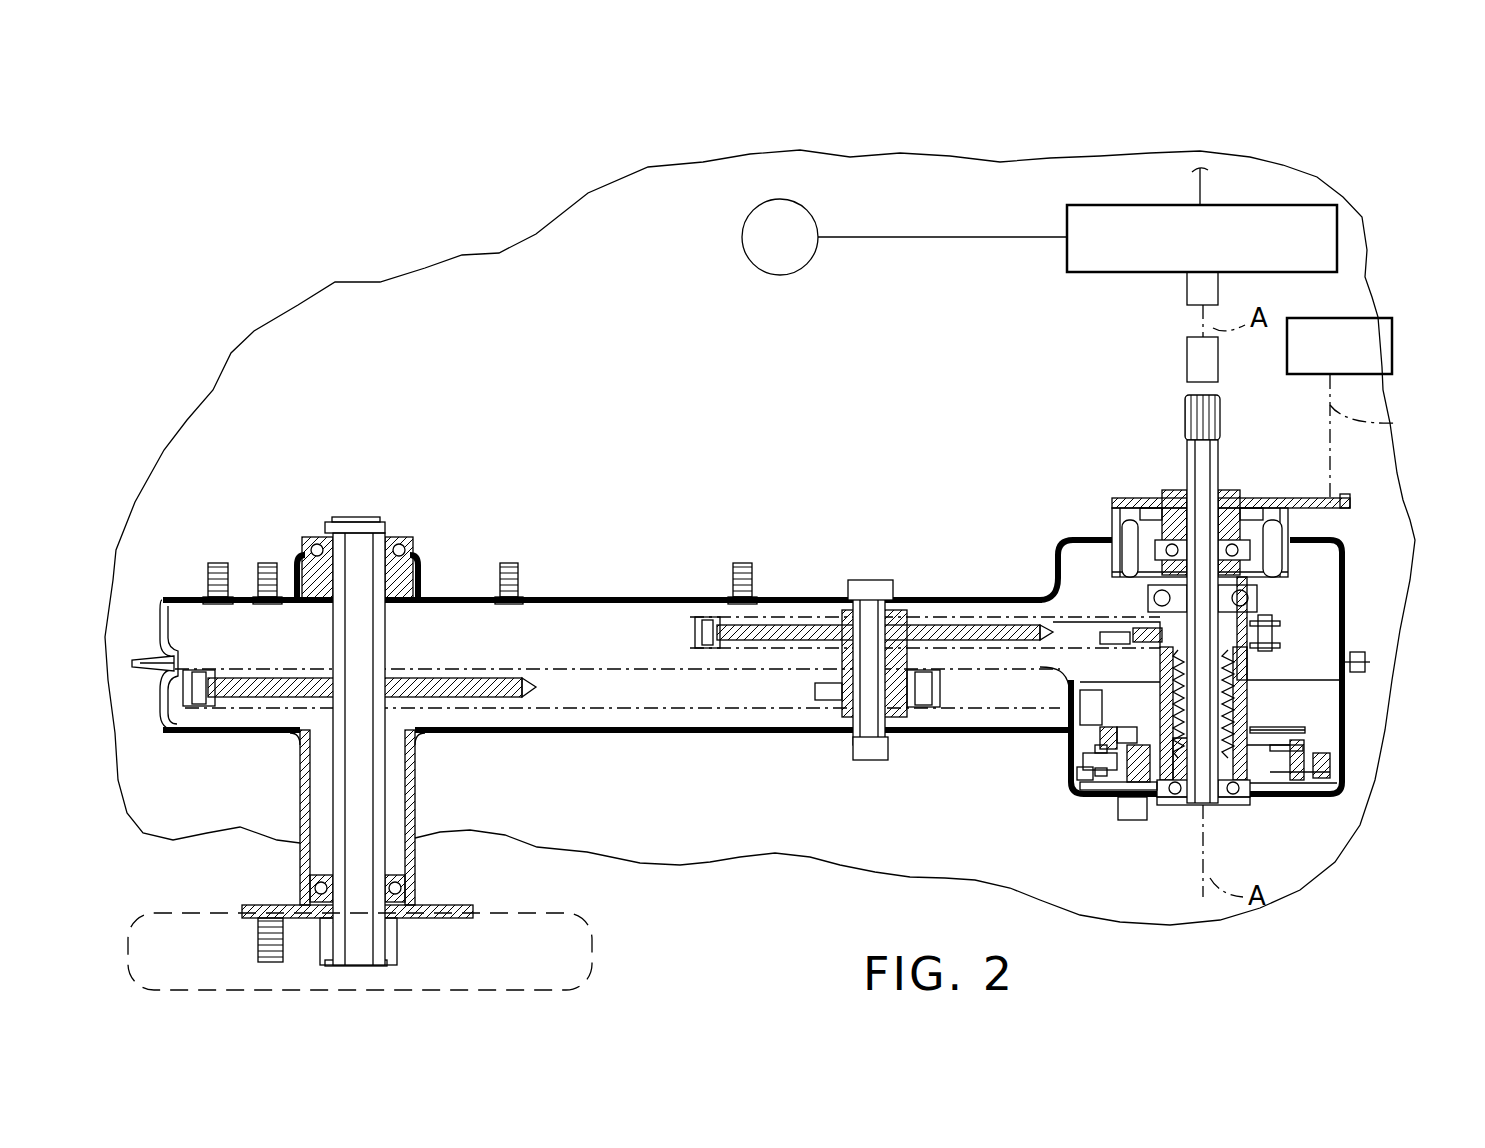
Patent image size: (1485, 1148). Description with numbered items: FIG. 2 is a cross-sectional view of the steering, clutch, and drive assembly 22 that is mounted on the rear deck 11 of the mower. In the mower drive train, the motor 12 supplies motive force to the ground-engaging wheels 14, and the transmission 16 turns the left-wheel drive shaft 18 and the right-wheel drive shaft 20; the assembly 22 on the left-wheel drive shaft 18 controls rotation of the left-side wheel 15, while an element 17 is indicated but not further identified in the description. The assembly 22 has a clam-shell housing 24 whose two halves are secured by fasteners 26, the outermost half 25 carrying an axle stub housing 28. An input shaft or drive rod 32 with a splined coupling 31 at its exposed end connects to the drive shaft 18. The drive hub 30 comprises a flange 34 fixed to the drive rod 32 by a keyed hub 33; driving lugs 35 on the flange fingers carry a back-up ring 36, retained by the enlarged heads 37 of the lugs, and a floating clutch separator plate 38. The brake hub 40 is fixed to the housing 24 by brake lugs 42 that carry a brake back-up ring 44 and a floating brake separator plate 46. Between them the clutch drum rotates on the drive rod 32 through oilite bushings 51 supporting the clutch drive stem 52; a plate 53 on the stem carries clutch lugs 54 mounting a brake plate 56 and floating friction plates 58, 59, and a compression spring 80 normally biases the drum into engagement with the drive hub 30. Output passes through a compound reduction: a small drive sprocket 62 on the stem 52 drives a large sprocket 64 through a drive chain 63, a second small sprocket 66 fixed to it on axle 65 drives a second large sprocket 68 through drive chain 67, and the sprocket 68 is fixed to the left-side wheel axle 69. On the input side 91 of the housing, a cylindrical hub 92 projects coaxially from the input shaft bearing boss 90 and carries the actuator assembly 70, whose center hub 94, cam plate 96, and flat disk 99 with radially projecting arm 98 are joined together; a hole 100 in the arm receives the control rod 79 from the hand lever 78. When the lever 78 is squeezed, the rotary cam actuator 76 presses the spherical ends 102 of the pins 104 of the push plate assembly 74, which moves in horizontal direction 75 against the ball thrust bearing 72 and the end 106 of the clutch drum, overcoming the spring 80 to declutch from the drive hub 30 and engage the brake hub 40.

The rear deck 11 is at (404, 295).
The motor 12 is at (805, 207).
The ground-engaging wheels 14 is at (160, 905).
The left-side wheel 15 is at (592, 955).
The transmission 16 is at (1318, 262).
The ground / frame 17 is at (727, 883).
The left-wheel drive shaft 18 is at (1187, 293).
The right-wheel drive shaft 20 is at (1205, 185).
The steering, clutch, and drive assembly 22 is at (1085, 430).
The clam-shell type housing 24 is at (598, 590).
The outermost half 25 is at (720, 733).
The fasteners 26 is at (1365, 672).
The axle stub housing 28 is at (415, 850).
The drive hub 30 is at (1275, 725).
The splined coupling 31 is at (1212, 415).
The input shaft or drive rod 32 is at (1205, 462).
The keyed hub 33 is at (1240, 740).
The flange 34 is at (1300, 742).
The driving lug 35 is at (1140, 805).
The back-up ring 36 is at (1105, 740).
The enlarged head 37 is at (1158, 745).
The clutch separator plate 38 is at (1122, 740).
The brake hub 40 is at (1310, 790).
The brake lugs 42 is at (1120, 815).
The brake back-up ring 44 is at (1085, 795).
The brake separator plate 46 is at (1135, 805).
The oilite bushings 51 is at (1265, 623).
The clutch drive stem 52 is at (1262, 655).
The plate 53 is at (1115, 683).
The clutch lugs 54 is at (1090, 720).
The brake plate 56 is at (1080, 782).
The floating friction plates 58 is at (1075, 748).
The floating friction plates 59 is at (1095, 790).
The small drive sprocket 62 is at (1330, 648).
The drive chain 63 is at (707, 617).
The large driven sprocket 64 is at (960, 625).
The axle 65 is at (866, 582).
The second small driver sprocket 66 is at (940, 690).
The drive chain 67 is at (182, 712).
The second large driven sprocket 68 is at (470, 667).
The left-side wheel axle 69 is at (365, 812).
The actuator assembly 70 is at (1290, 462).
The ball thrust bearing member 72 is at (1115, 582).
The push plate assembly 74 is at (1342, 547).
The horizontal direction 75 is at (1387, 540).
The rotary cam actuator 76 is at (1345, 492).
The hand lever 78 is at (1350, 375).
The control rod 79 is at (1380, 439).
The compression spring 80 is at (1185, 790).
The input shaft bearing boss 90 is at (1190, 500).
The input side 91 is at (1178, 440).
The cylindrical hub 92 is at (1235, 490).
The center hub 94 is at (1175, 495).
The cam plate 96 is at (1130, 505).
The arm 98 is at (1300, 500).
The flat disk 99 is at (1160, 515).
The hole 100 is at (1345, 498).
The spherical ends 102 is at (1125, 525).
The pins 104 is at (1120, 540).
The end 106 is at (1180, 624).